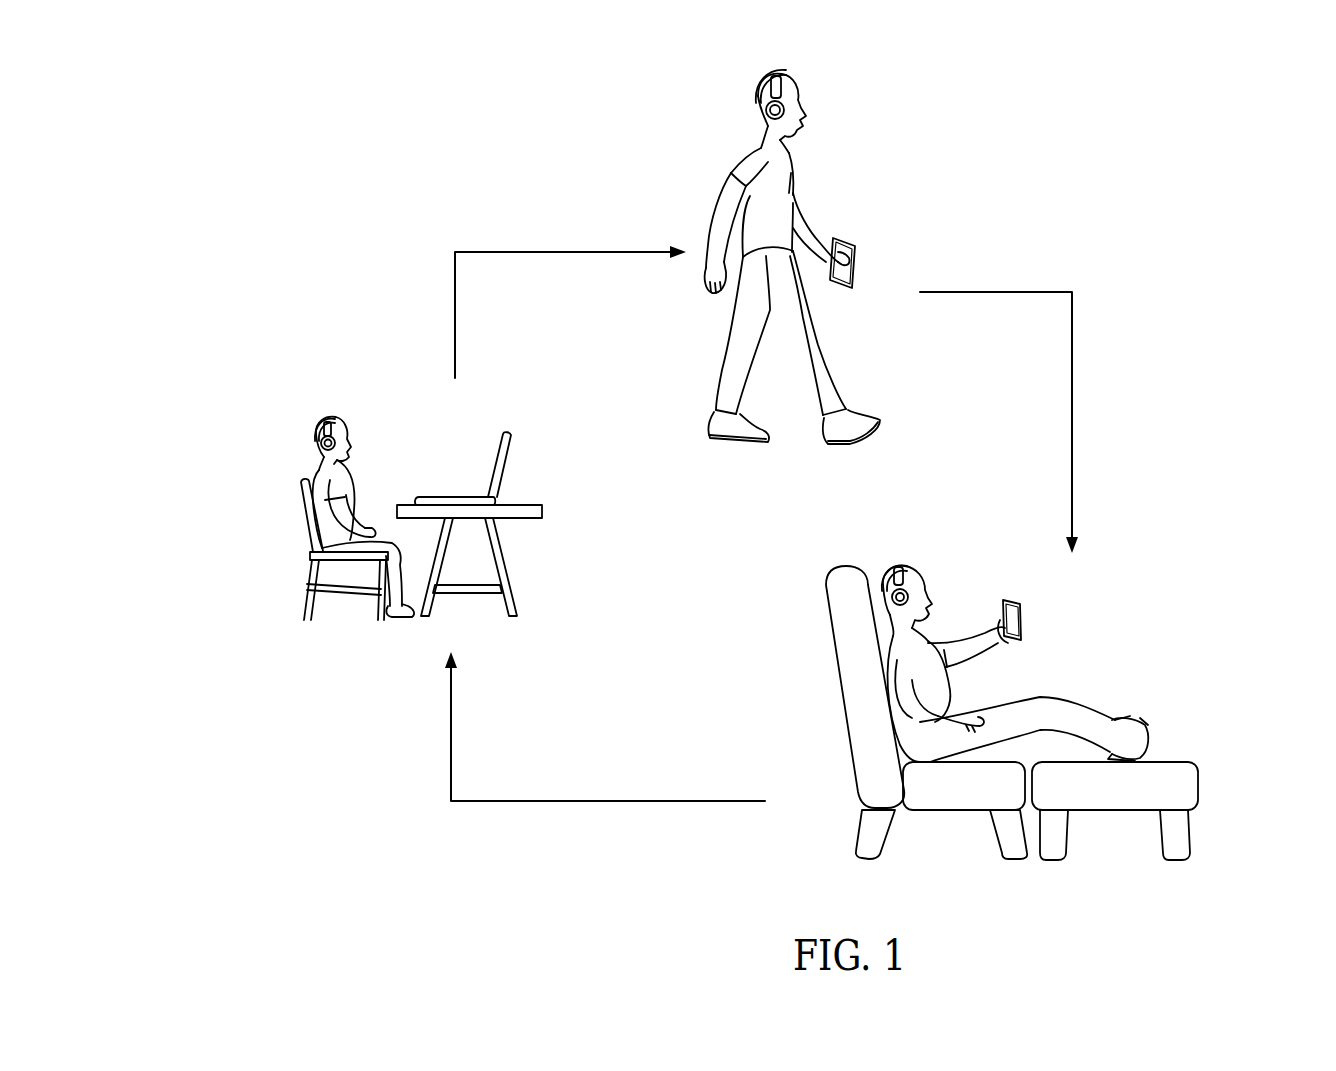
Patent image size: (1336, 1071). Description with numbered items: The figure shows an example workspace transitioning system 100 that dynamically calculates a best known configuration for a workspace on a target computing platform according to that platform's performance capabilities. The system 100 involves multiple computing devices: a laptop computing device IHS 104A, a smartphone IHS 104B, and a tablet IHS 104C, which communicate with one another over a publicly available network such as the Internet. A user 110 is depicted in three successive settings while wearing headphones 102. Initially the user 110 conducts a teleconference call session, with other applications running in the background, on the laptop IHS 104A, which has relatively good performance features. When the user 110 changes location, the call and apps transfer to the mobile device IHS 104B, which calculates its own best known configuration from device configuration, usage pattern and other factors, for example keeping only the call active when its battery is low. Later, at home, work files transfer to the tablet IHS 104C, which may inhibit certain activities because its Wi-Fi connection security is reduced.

The workspace transitioning system 100 is at (277, 137).
The headphones 102 is at (790, 85).
The computing device IHS 104A is at (510, 446).
The smartphone IHS 104B is at (860, 261).
The tablet IHS 104C is at (1013, 603).
The user 110 is at (730, 353).